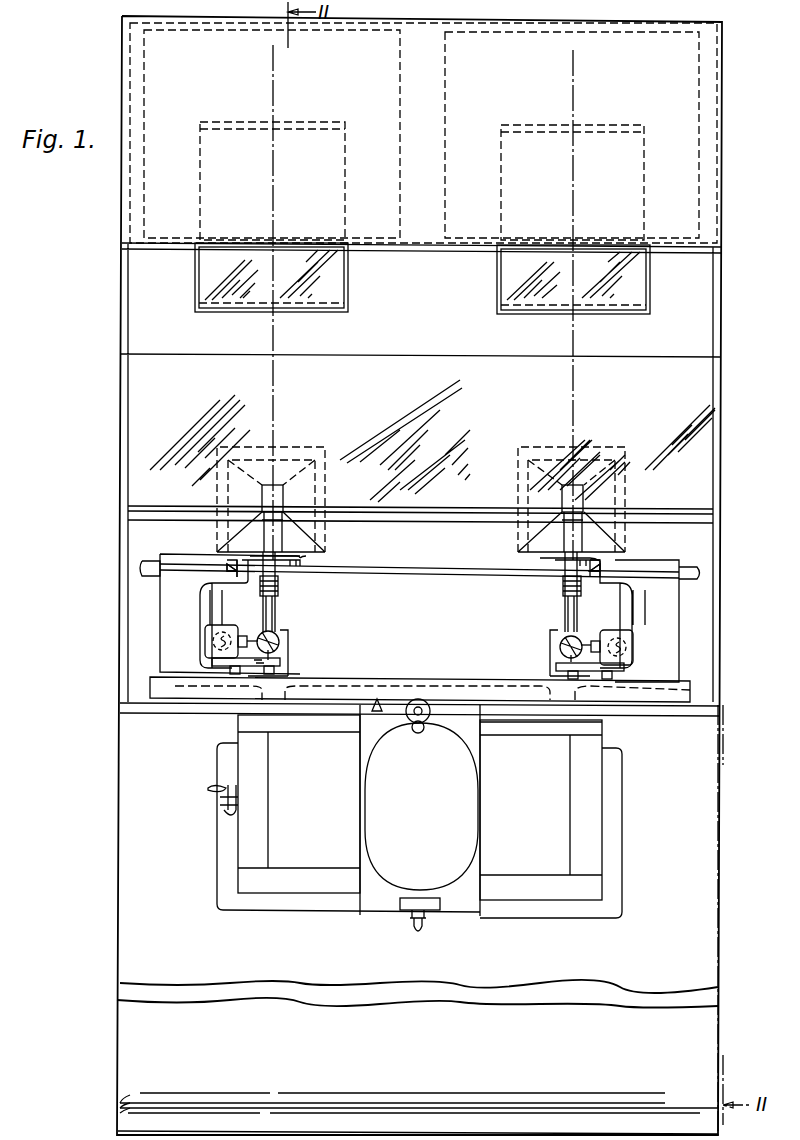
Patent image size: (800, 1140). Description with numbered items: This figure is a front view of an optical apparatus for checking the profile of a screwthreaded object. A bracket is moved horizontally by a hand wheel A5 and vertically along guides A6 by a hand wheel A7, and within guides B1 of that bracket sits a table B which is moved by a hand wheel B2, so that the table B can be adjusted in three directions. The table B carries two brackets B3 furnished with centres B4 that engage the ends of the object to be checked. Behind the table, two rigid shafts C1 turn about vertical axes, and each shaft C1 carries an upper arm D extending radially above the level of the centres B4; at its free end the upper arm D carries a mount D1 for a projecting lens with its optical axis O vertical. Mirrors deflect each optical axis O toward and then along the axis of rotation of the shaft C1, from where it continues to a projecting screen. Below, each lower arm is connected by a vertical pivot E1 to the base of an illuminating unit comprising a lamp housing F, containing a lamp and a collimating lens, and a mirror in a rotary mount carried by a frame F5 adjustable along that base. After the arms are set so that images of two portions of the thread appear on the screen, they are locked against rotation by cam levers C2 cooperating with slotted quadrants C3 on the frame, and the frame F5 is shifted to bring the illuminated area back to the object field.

The optical axis O is at (273, 337).
The mount D1 is at (300, 490).
The upper arm D is at (325, 545).
The bracket B3 is at (172, 603).
The centre B4 is at (232, 573).
The slotted quadrant C3 is at (300, 566).
The cam lever C2 is at (278, 580).
The rigid shaft C1 is at (275, 610).
The lamp housing F is at (205, 645).
The frame F5 is at (279, 650).
The vertical pivot E1 is at (280, 664).
The table B is at (692, 689).
The guide B1 is at (375, 713).
The hand wheel B2 is at (418, 733).
The hand wheel A5 is at (206, 792).
The guide A6 is at (480, 816).
The hand wheel A7 is at (424, 930).